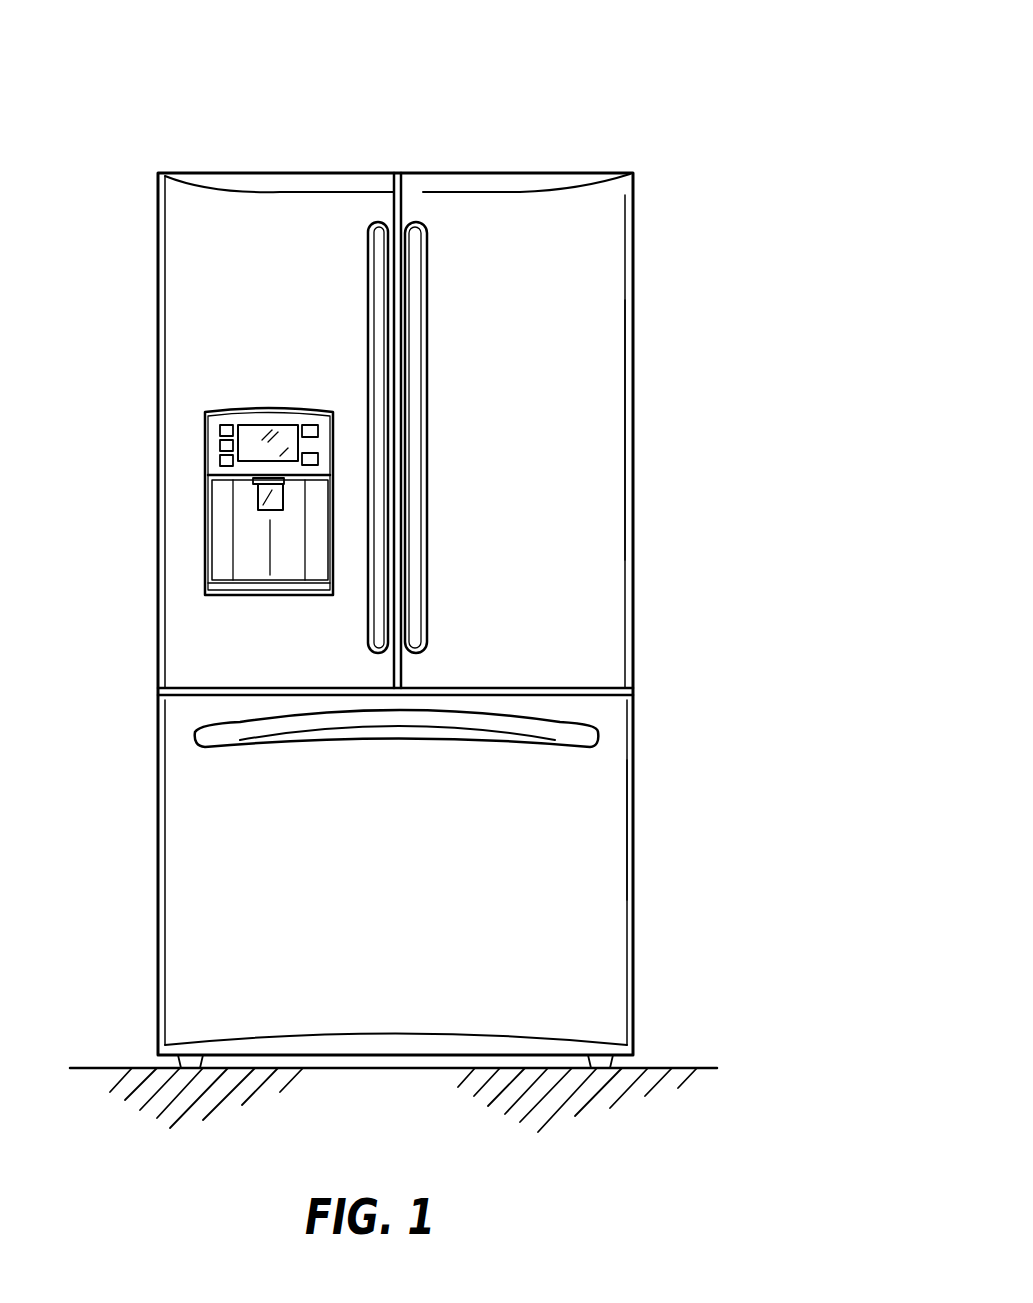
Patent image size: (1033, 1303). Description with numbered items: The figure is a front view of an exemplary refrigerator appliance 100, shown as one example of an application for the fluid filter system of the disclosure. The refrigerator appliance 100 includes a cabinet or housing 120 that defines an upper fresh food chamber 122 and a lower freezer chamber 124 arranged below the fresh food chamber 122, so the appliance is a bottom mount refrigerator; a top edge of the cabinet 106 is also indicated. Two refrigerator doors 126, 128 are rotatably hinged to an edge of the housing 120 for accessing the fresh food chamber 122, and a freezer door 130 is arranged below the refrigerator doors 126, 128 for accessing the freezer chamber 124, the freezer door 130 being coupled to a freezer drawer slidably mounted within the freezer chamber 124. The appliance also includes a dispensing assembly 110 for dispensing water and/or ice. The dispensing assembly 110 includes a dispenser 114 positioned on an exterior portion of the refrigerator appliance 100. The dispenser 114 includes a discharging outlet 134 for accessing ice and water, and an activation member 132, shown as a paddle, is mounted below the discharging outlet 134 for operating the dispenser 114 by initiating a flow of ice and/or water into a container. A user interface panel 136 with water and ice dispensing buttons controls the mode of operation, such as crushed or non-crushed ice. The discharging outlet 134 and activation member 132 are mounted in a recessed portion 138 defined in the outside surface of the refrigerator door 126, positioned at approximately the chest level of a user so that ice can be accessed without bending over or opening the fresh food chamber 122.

The refrigerator appliance 100 is at (394, 534).
The cabinet 106 is at (650, 172).
The dispensing assembly 110 is at (218, 378).
The dispenser 114 is at (252, 555).
The housing 120 is at (158, 885).
The fresh food chamber 122 is at (600, 438).
The freezer chamber 124 is at (600, 820).
The refrigerator door 126 is at (188, 268).
The refrigerator door 128 is at (608, 313).
The freezer door 130 is at (598, 935).
The activation member 132 is at (258, 492).
The discharging outlet 134 is at (255, 507).
The user interface panel 136 is at (215, 443).
The recessed portion 138 is at (280, 575).